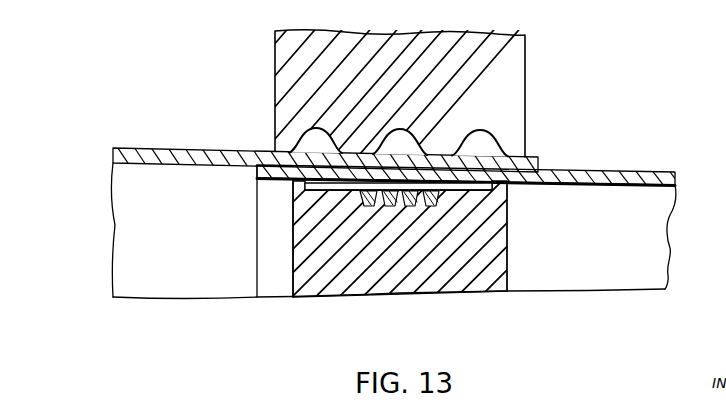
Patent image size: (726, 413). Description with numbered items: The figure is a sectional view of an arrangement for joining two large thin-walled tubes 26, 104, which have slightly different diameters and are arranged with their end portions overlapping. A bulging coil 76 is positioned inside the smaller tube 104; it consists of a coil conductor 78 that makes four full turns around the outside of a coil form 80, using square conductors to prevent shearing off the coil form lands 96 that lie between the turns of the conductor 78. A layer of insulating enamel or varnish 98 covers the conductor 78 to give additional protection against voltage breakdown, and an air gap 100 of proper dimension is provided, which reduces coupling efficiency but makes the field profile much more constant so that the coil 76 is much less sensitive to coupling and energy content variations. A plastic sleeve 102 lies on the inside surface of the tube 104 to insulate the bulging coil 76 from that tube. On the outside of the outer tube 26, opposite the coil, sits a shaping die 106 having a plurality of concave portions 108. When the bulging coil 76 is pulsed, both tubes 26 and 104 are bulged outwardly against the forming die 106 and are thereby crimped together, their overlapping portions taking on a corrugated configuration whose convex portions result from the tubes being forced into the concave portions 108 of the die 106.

The large tube 26 is at (213, 152).
The bulging coil 76 is at (226, 228).
The coil conductor 78 is at (299, 255).
The coil form 80 is at (448, 278).
The coil form lands 96 is at (358, 195).
The layer of insulating enamel or varnish 98 is at (440, 197).
The air gap 100 is at (305, 184).
The plastic sleeve 102 is at (512, 186).
The smaller tube 104 is at (582, 173).
The shaping die 106 is at (525, 47).
The concave portions 108 is at (517, 110).